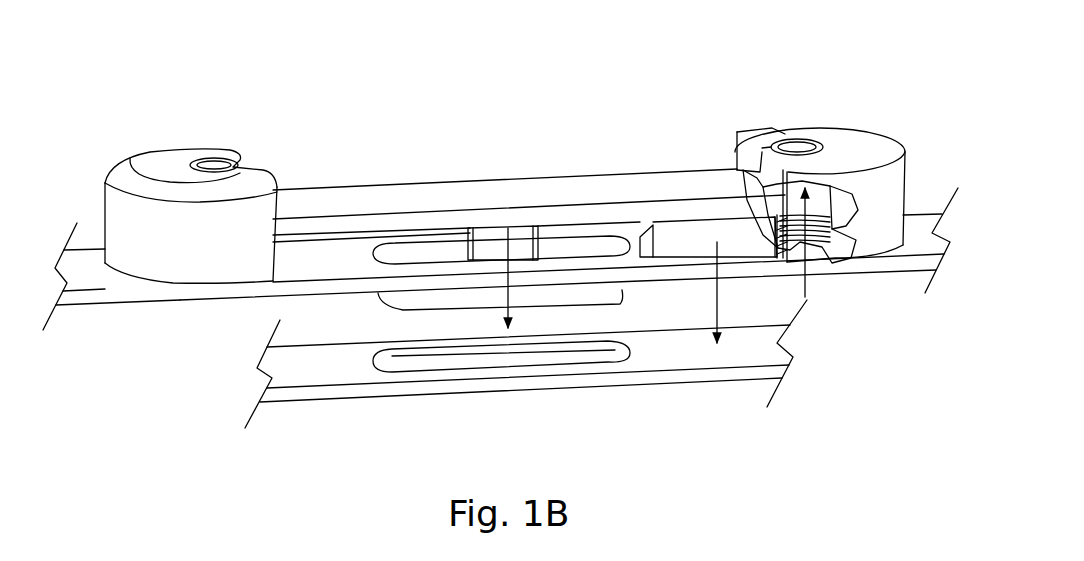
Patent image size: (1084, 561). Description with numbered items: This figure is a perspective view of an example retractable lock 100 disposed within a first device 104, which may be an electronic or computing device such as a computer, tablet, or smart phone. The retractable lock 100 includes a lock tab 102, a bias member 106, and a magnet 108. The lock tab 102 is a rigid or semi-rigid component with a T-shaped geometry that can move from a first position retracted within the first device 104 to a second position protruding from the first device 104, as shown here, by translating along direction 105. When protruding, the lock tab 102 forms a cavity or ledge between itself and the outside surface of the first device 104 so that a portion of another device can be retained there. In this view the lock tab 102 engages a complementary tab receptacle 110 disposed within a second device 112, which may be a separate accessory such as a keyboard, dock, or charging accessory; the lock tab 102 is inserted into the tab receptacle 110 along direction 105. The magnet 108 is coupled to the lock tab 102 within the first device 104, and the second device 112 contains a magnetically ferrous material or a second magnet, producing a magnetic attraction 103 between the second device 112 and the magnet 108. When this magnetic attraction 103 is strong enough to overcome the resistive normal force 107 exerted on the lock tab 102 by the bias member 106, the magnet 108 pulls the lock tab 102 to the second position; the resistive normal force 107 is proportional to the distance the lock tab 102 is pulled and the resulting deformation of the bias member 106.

The retractable lock 100 is at (206, 80).
The lock tab 102 is at (412, 302).
The magnetic attraction 103 is at (717, 290).
The first device 104 is at (121, 281).
The direction 105 is at (507, 297).
The bias member 106 is at (830, 233).
The resistive normal force 107 is at (780, 195).
The magnet 108 is at (640, 238).
The tab receptacle 110 is at (426, 360).
The second device 112 is at (667, 360).